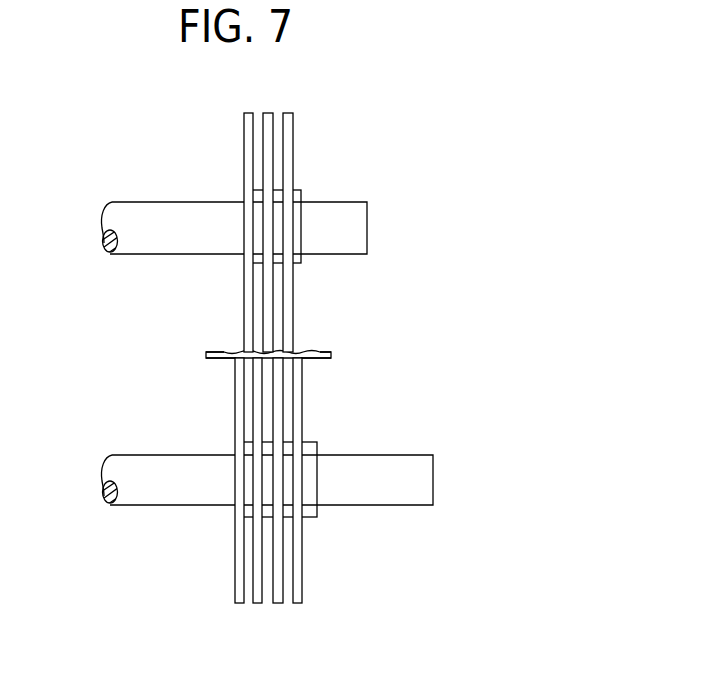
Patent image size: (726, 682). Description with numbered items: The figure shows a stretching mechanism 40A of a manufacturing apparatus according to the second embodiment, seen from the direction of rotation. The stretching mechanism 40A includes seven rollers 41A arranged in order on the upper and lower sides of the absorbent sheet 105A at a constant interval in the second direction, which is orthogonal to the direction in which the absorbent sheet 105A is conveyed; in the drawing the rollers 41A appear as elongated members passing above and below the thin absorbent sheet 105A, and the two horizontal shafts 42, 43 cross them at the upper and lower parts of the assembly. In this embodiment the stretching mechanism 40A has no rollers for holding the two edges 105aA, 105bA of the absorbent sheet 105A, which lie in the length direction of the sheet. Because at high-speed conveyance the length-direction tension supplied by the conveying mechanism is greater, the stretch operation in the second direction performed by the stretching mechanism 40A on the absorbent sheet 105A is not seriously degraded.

The stretching mechanism 40A is at (458, 152).
The rollers 41A is at (288, 113).
The lower pipe 42 is at (141, 505).
The upper pipe 43 is at (131, 202).
The absorbent sheet 105A is at (312, 350).
The edge of absorbent sheet 105aA is at (217, 362).
The edge of absorbent sheet 105bA is at (321, 362).